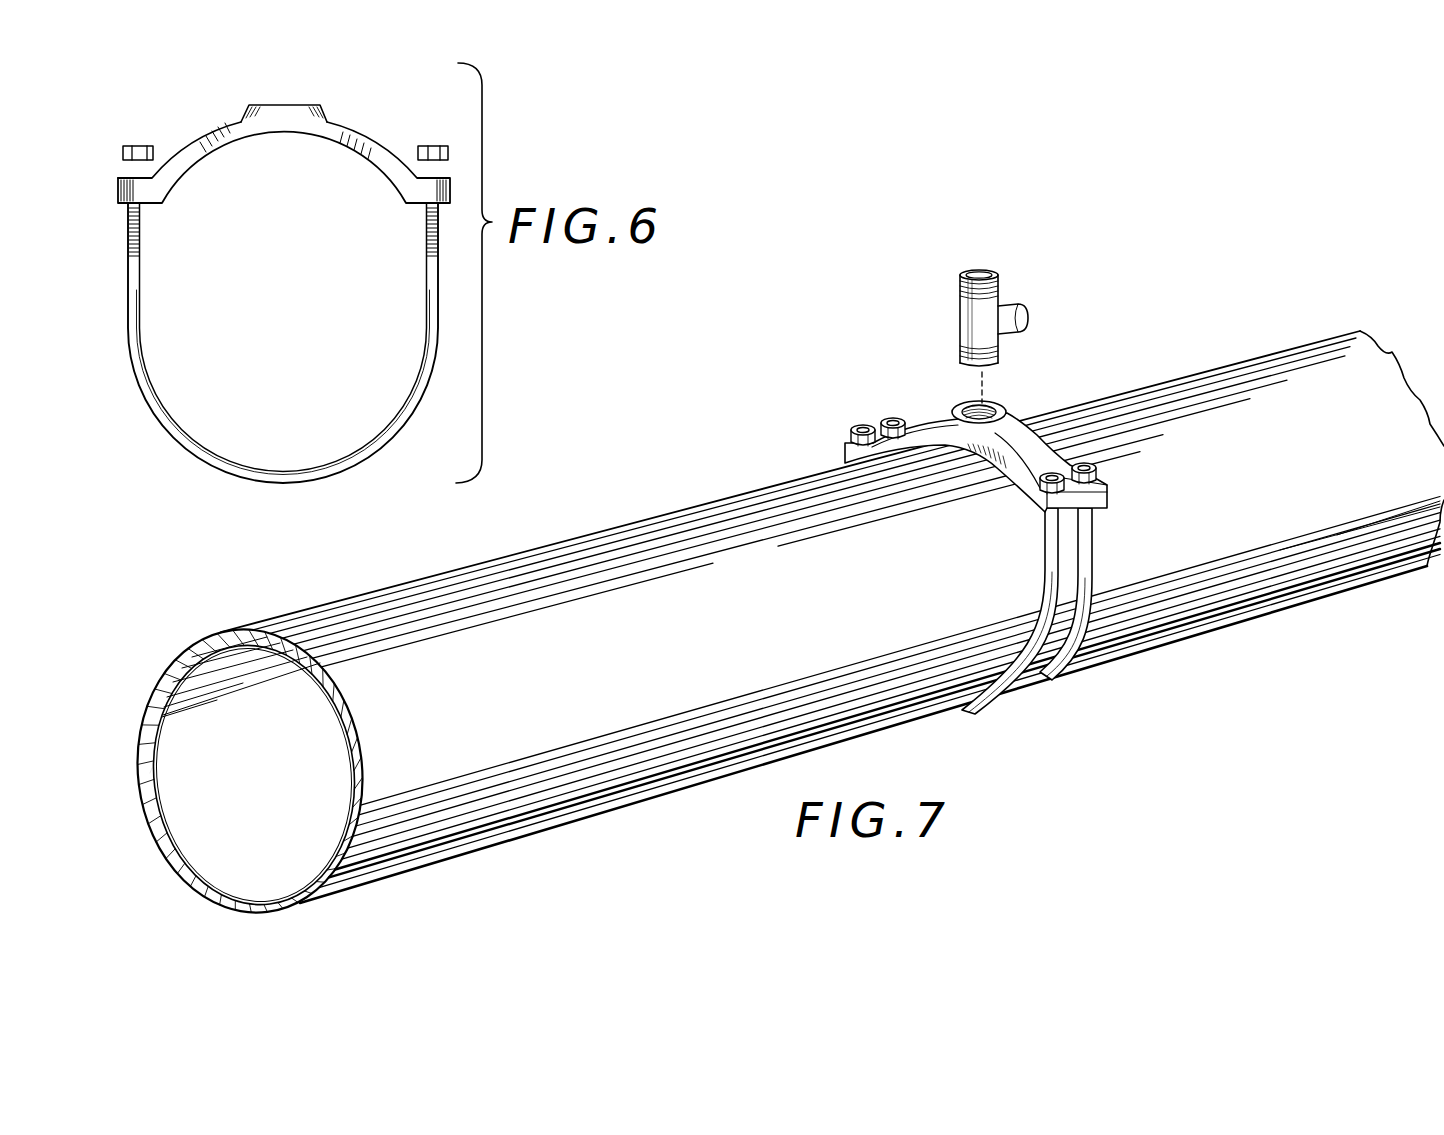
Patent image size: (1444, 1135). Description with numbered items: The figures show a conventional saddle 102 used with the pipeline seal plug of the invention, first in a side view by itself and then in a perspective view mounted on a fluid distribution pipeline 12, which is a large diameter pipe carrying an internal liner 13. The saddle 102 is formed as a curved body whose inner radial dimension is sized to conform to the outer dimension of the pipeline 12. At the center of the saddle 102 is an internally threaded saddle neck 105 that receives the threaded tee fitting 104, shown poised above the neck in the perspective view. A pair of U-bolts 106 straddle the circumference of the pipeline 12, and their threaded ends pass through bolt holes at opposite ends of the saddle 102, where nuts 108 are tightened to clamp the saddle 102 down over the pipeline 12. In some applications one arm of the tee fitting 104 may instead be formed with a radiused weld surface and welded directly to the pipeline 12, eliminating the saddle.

In FIG. 7, the fluid distribution pipeline 12 is at (1292, 611).
In FIG. 7, the internal liner 13 is at (349, 778).
In FIG. 6, the saddle 102 is at (370, 131).
In FIG. 7, the saddle 102 is at (928, 420).
In FIG. 7, the tee fitting 104 is at (1006, 293).
In FIG. 6, the saddle neck 105 is at (321, 118).
In FIG. 7, the saddle neck 105 is at (1003, 406).
In FIG. 6, the U-bolts 106 is at (338, 469).
In FIG. 7, the U-bolts 106 is at (1018, 691).
In FIG. 6, the nuts 108 is at (134, 146).
In FIG. 7, the nuts 108 is at (1100, 496).